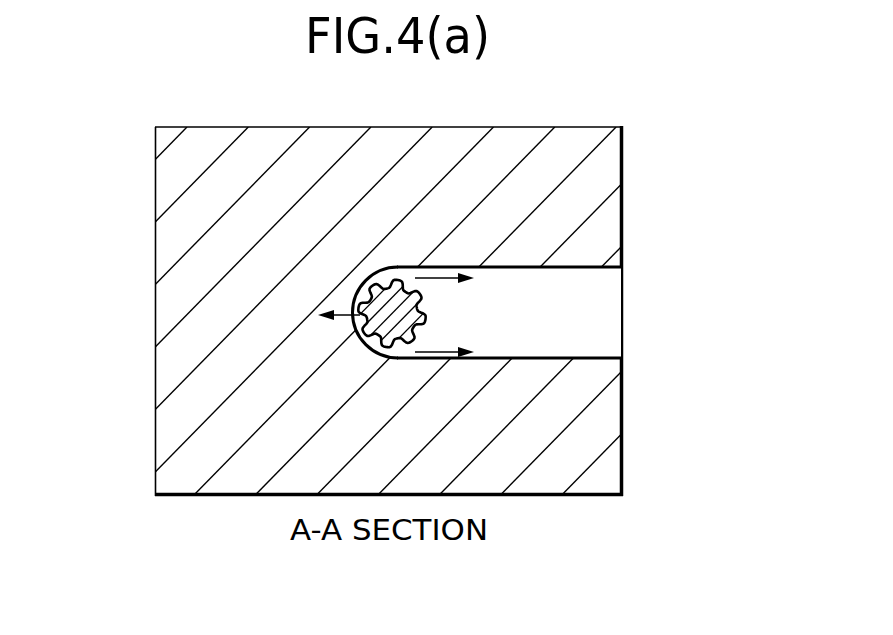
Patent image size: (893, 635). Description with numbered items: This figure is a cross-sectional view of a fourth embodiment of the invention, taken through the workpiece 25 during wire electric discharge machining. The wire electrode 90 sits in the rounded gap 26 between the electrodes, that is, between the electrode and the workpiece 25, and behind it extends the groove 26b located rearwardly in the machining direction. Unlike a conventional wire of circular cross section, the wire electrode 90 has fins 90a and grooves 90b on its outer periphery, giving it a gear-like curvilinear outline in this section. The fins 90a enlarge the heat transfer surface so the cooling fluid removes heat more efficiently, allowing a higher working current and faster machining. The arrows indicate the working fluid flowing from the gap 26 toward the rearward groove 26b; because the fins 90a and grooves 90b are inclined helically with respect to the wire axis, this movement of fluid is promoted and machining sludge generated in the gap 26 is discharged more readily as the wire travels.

The workpiece 25 is at (598, 470).
The gap between the electrodes 26 is at (353, 340).
The groove 26b is at (607, 340).
The wire electrode 90 is at (385, 268).
The fin 90a is at (426, 299).
The groove 90b is at (425, 312).